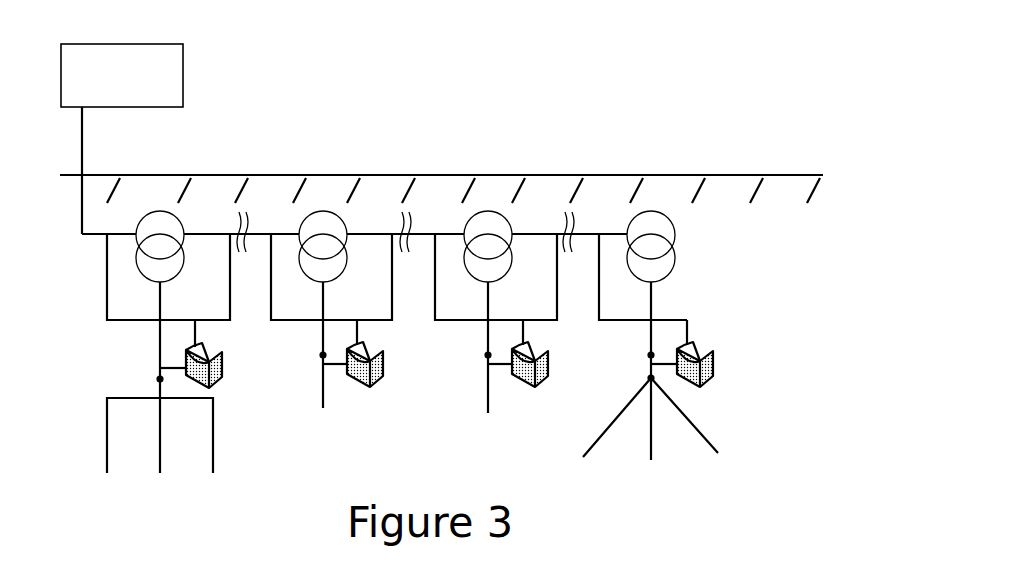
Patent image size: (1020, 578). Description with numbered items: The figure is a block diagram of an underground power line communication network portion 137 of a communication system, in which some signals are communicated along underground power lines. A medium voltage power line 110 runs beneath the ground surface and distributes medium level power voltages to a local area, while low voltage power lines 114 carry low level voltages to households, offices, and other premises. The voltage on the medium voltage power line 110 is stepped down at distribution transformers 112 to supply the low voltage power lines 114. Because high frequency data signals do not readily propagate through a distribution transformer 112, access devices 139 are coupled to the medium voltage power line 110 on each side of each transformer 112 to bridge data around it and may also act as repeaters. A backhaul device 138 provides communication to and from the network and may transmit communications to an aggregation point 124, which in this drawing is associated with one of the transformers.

The medium voltage power line 110 is at (83, 163).
The distribution transformer 112 is at (313, 214).
The low voltage power line 114 is at (107, 414).
The aggregation point 124 is at (675, 268).
The underground power line communication network portion 137 is at (403, 98).
The backhaul device 138 is at (125, 35).
The access device 139 is at (203, 350).